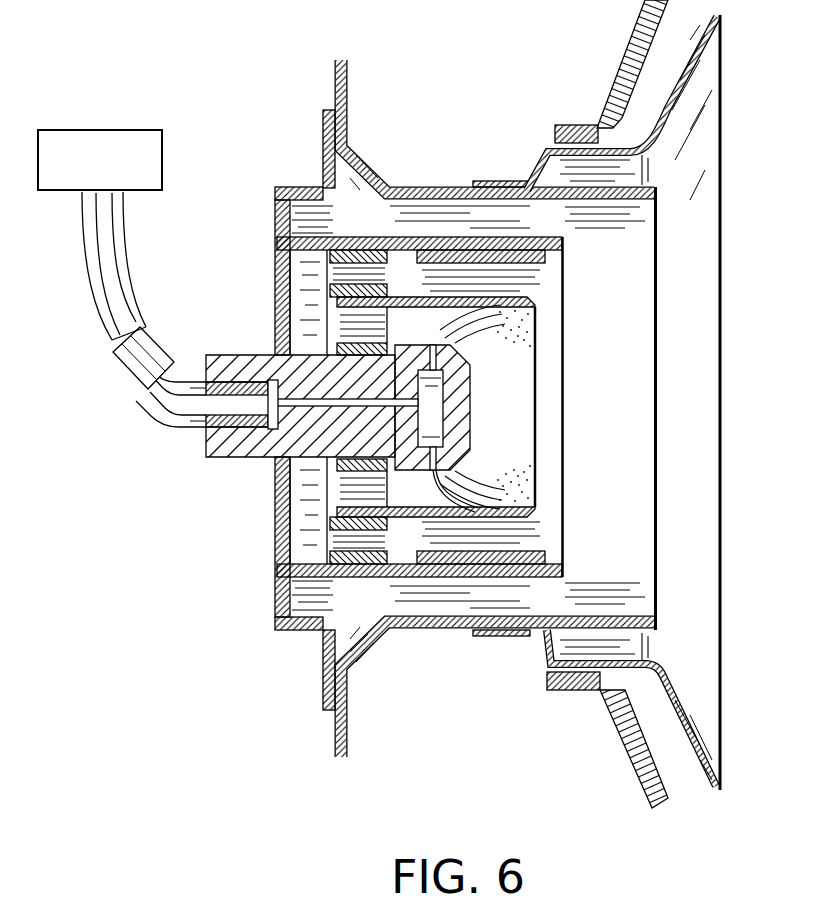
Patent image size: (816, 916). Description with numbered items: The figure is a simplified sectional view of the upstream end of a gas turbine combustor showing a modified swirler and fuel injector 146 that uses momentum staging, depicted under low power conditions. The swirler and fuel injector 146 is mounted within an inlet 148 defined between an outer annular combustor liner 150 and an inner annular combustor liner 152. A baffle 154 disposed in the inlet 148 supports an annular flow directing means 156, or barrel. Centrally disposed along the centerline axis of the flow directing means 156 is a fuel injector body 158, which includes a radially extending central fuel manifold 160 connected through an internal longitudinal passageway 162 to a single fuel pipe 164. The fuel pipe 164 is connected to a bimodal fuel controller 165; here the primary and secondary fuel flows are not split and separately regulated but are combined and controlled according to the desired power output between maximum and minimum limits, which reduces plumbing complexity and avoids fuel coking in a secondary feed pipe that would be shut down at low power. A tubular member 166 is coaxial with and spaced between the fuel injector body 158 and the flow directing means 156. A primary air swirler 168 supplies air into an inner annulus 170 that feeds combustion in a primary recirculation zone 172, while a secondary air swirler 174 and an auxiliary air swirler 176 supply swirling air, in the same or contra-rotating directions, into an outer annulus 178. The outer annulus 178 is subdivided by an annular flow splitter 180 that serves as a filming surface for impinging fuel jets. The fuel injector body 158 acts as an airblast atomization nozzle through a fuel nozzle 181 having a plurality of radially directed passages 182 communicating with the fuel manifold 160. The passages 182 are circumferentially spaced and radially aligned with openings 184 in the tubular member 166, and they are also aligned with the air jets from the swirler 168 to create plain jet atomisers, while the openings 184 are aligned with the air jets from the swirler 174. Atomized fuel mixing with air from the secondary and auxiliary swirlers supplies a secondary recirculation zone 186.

The swirler and fuel injector 146 is at (258, 190).
The inlet 148 is at (537, 157).
The outer annular combustor liner 150 is at (618, 72).
The inner annular combustor liner 152 is at (620, 752).
The baffle 154 is at (693, 72).
The annular flow directing means 156 is at (630, 182).
The fuel injector body 158 is at (243, 355).
The central fuel manifold 160 is at (440, 416).
The internal longitudinal passageway 162 is at (305, 408).
The fuel pipe 164 is at (128, 364).
The bimodal fuel controller 165 is at (83, 172).
The tubular member 166 is at (563, 278).
The primary air swirler 168 is at (337, 495).
The inner annulus 170 is at (430, 505).
The primary recirculation zone 172 is at (548, 485).
The secondary air swirler 174 is at (355, 272).
The auxiliary air swirler 176 is at (292, 219).
The outer annulus 178 is at (594, 200).
The annular flow splitter 180 is at (545, 270).
The fuel nozzle 181 is at (470, 401).
The radially directed passages 182 is at (434, 356).
The openings 184 is at (452, 295).
The secondary recirculation zone 186 is at (730, 420).